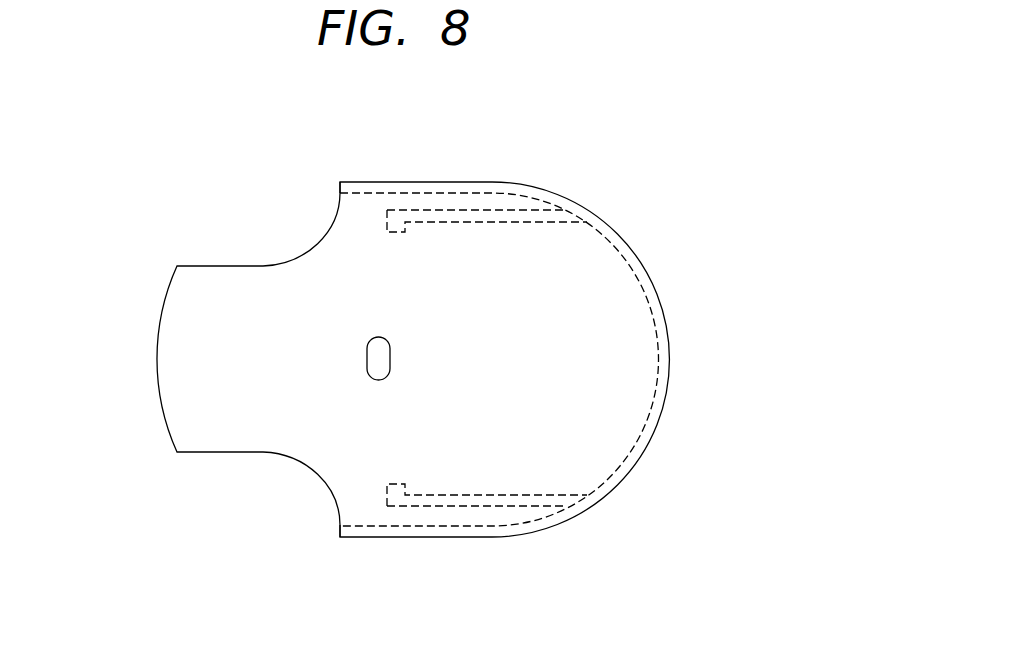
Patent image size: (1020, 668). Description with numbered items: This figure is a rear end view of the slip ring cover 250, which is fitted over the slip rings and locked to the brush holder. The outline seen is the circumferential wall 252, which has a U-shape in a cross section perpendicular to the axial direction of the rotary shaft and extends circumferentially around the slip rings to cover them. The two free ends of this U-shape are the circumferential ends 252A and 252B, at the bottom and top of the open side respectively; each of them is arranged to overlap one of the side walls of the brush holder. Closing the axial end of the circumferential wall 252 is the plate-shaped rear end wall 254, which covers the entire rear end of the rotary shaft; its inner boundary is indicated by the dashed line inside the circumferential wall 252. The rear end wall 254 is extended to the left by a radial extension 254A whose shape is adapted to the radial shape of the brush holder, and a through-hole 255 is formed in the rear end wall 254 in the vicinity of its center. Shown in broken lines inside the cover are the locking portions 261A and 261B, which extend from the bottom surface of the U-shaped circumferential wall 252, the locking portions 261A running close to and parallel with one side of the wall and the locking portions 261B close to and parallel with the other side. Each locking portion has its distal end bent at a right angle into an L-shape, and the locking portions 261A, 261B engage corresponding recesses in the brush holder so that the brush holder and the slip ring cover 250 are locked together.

The slip ring cover 250 is at (622, 170).
The circumferential wall 252 is at (663, 305).
The circumferential end 252A is at (340, 527).
The circumferential end 252B is at (340, 188).
The rear end wall 254 is at (440, 267).
The radial extension 254A is at (202, 373).
The through-hole 255 is at (375, 360).
The locking portions 261A is at (467, 495).
The locking portions 261B is at (495, 222).